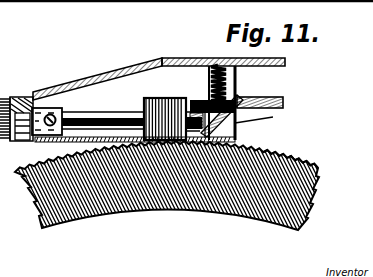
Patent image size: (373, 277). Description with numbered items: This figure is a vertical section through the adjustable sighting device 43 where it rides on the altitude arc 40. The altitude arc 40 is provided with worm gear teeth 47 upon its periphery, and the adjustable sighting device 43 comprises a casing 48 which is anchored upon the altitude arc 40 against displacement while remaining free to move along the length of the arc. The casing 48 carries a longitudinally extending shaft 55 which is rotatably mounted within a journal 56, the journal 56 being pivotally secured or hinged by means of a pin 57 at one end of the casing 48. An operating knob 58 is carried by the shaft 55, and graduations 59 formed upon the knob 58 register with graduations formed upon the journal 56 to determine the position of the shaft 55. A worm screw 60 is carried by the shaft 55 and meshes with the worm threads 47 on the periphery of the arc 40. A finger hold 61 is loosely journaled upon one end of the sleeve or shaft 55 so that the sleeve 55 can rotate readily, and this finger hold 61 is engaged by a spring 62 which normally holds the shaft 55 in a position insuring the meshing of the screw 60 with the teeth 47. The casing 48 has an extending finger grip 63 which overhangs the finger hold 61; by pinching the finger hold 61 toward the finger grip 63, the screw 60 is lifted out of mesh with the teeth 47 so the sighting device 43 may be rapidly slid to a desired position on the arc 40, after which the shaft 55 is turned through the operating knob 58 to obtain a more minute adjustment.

The altitude arc 40 is at (147, 188).
The adjustable sighting device 43 is at (107, 75).
The worm gear teeth 47 is at (291, 158).
The casing 48 is at (153, 64).
The shaft 55 is at (88, 122).
The journal 56 is at (15, 142).
The pin 57 is at (51, 113).
The operating knob 58 is at (16, 106).
The graduations 59 is at (5, 98).
The worm screw 60 is at (168, 98).
The finger hold 61 is at (256, 95).
The spring 62 is at (236, 81).
The finger grip 63 is at (266, 62).